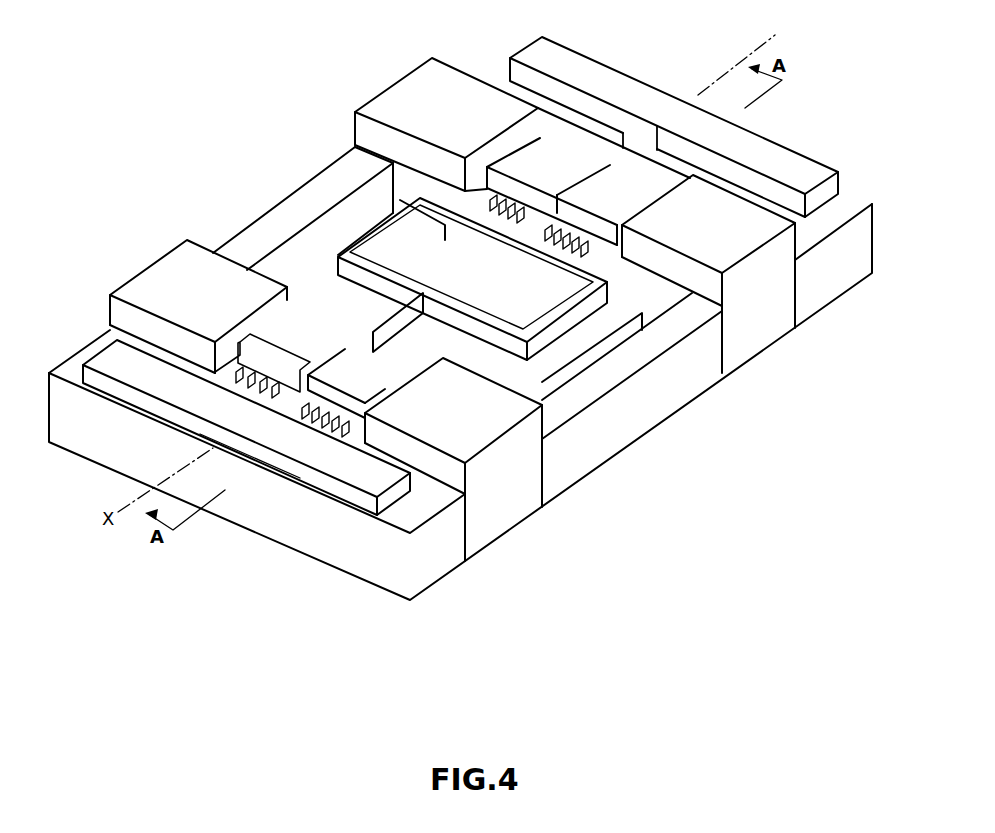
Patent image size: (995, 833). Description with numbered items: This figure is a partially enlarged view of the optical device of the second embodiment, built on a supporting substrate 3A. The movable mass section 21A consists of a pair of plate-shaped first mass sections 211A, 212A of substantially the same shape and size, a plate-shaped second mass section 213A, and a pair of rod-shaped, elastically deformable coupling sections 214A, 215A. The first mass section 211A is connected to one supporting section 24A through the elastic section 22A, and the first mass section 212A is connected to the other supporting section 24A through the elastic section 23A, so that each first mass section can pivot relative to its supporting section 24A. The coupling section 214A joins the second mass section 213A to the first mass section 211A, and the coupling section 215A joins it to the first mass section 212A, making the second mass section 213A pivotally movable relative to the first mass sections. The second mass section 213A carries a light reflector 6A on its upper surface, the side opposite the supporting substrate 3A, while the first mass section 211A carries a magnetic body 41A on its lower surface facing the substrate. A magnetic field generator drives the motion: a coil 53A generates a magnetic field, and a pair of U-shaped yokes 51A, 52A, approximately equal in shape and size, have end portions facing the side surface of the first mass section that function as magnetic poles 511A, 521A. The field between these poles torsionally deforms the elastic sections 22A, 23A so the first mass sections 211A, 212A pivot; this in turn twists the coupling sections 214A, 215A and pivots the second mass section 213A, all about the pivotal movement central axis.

The supporting substrate 3A is at (643, 446).
The yoke 51A is at (632, 390).
The magnetic pole 511A is at (418, 395).
The yoke 52A is at (381, 200).
The magnetic pole 521A is at (227, 312).
The coil 53A is at (350, 412).
The light reflector 6A is at (643, 360).
The mass section 21A is at (389, 188).
The first mass section 211A is at (257, 253).
The first mass section 212A is at (530, 160).
The second mass section 213A is at (367, 220).
The coupling section 214A is at (295, 257).
The coupling section 215A is at (361, 151).
The elastic section 22A is at (283, 465).
The elastic section 23A is at (637, 130).
The supporting section 24A is at (137, 373).
The magnetic body 41A is at (213, 381).